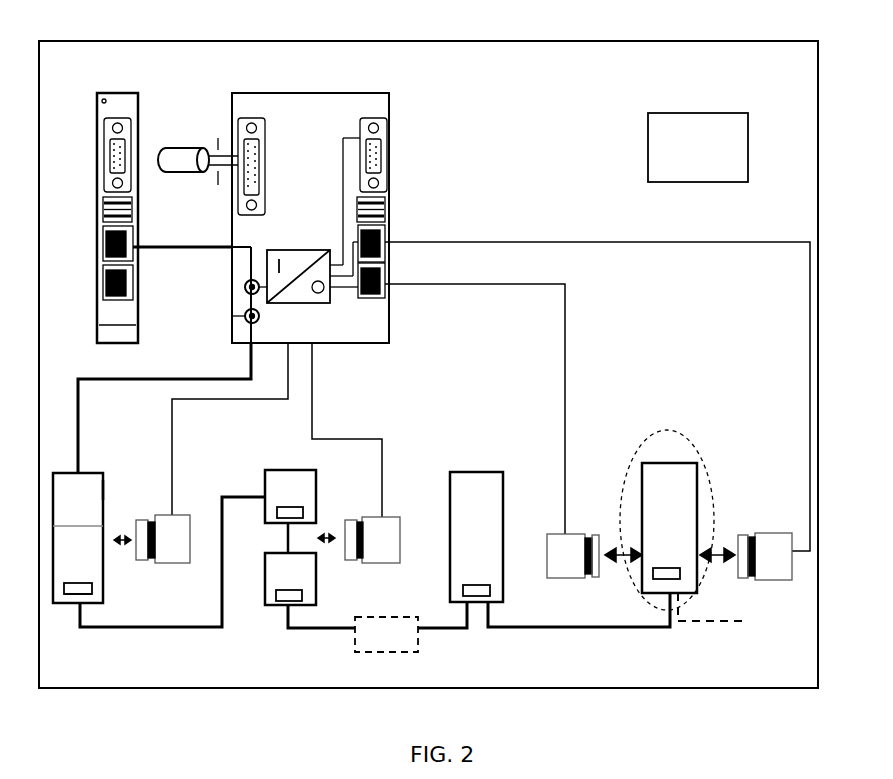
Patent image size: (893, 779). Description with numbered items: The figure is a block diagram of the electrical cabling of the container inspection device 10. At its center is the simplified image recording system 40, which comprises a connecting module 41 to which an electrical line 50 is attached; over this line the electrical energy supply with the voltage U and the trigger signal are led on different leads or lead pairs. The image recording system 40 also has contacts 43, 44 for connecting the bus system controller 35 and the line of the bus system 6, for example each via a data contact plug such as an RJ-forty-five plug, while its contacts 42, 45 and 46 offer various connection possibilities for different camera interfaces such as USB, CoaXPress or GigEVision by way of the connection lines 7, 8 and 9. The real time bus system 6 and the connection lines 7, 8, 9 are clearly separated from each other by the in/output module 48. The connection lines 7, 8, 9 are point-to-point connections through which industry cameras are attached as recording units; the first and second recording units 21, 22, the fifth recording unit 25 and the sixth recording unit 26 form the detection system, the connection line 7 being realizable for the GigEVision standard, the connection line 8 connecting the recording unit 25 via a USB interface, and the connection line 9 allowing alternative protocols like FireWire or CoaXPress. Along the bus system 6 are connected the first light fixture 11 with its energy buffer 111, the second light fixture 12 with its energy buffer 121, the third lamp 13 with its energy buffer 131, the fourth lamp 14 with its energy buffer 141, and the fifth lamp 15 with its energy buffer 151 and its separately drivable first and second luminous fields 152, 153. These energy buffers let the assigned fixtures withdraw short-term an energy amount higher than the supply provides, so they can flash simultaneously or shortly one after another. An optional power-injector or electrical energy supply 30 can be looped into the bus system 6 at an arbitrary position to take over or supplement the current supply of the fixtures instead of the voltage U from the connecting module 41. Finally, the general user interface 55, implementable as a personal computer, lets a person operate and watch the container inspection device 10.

The container inspection device 10 is at (685, 41).
The bus system controller 35 is at (115, 93).
The image recording system 40 is at (417, 103).
The connecting module 41 is at (246, 118).
The contact 42 is at (368, 118).
The contact 43 is at (244, 287).
The contact 44 is at (244, 317).
The contact 45 is at (390, 212).
The contact 46 is at (390, 235).
The in/output module 48 is at (297, 250).
The electrical line 50 is at (170, 148).
The general user interface 55 is at (700, 113).
The bus system 6 is at (173, 247).
The connection line 7 is at (565, 436).
The connection line 8 is at (349, 438).
The connection line 9 is at (172, 435).
The fifth lamp 15 is at (90, 474).
The energy buffer 151 is at (73, 598).
The first luminous field 152 is at (102, 489).
The second luminous field 153 is at (98, 591).
The fourth lamp 14 is at (317, 480).
The energy buffer 141 is at (282, 520).
The third lamp 13 is at (317, 594).
The energy buffer 131 is at (282, 603).
The second light fixture 12 is at (501, 480).
The energy buffer 121 is at (463, 592).
The first light fixture 11 is at (682, 525).
The energy buffer 111 is at (660, 582).
The first recording unit 21 is at (765, 556).
The second recording unit 22 is at (573, 556).
The fifth recording unit 25 is at (372, 540).
The sixth recording unit 26 is at (163, 539).
The electrical energy supply 30 is at (372, 654).